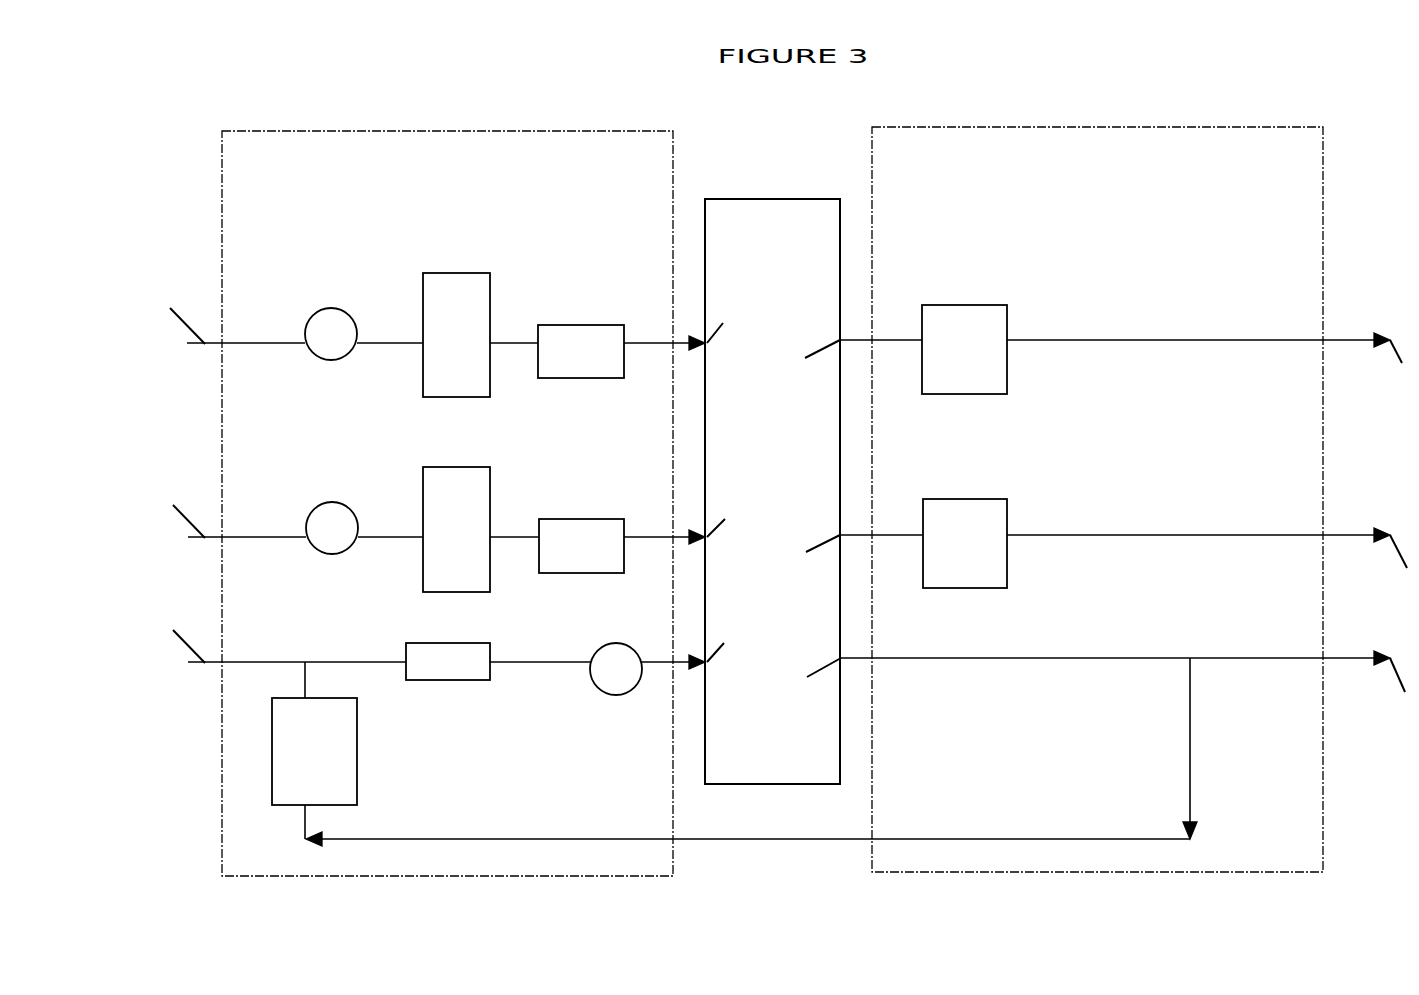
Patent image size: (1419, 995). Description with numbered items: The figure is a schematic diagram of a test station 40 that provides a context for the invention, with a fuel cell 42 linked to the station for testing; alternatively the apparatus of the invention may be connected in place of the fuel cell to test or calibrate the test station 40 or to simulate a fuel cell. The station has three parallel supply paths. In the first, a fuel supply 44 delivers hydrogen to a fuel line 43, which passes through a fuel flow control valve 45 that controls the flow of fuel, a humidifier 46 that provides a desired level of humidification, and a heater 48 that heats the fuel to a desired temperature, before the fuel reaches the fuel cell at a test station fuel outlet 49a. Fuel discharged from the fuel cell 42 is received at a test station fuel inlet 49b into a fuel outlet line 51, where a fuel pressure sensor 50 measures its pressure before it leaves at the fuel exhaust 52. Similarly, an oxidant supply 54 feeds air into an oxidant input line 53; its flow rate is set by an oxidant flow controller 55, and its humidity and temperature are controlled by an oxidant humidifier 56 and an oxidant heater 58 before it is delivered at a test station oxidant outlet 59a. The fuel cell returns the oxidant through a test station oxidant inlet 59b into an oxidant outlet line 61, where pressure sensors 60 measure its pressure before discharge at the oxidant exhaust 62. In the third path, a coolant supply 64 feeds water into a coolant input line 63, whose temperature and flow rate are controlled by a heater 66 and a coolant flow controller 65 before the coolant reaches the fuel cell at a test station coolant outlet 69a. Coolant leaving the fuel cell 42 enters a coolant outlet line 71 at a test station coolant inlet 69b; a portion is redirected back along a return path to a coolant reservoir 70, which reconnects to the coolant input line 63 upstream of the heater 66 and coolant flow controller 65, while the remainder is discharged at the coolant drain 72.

The test station 40 is at (405, 131).
The fuel cell 42 is at (772, 199).
The fuel line 43 is at (272, 343).
The fuel supply 44 is at (178, 305).
The fuel flow control valve 45 is at (340, 308).
The humidifier 46 is at (456, 273).
The heater 48 is at (572, 325).
The test station fuel outlet 49a is at (739, 320).
The test station fuel inlet 49b is at (812, 367).
The fuel pressure sensor 50 is at (973, 305).
The fuel outlet line 51 is at (1172, 340).
The fuel exhaust 52 is at (1399, 372).
The oxidant input line 53 is at (273, 537).
The oxidant supply 54 is at (178, 508).
The oxidant flow controller 55 is at (340, 503).
The oxidant humidifier 56 is at (423, 555).
The oxidant heater 58 is at (573, 519).
The test station oxidant outlet 59a is at (740, 514).
The test station oxidant inlet 59b is at (813, 561).
The pressure sensors 60 is at (973, 499).
The oxidant outlet line 61 is at (1140, 535).
The oxidant exhaust 62 is at (1397, 568).
The coolant input line 63 is at (273, 662).
The coolant supply 64 is at (178, 632).
The coolant flow controller 65 is at (607, 695).
The heater 66 is at (456, 680).
The test station coolant outlet 69a is at (740, 640).
The test station coolant inlet 69b is at (813, 683).
The coolant reservoir 70 is at (357, 788).
The coolant outlet line 71 is at (1257, 658).
The coolant drain 72 is at (1397, 701).